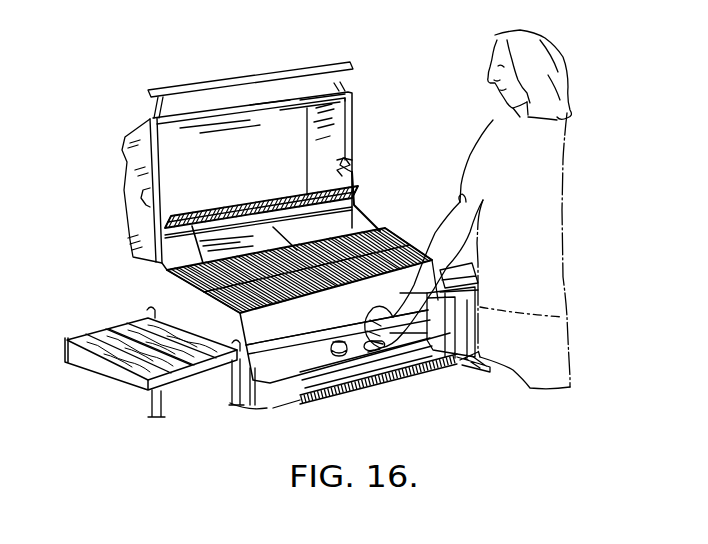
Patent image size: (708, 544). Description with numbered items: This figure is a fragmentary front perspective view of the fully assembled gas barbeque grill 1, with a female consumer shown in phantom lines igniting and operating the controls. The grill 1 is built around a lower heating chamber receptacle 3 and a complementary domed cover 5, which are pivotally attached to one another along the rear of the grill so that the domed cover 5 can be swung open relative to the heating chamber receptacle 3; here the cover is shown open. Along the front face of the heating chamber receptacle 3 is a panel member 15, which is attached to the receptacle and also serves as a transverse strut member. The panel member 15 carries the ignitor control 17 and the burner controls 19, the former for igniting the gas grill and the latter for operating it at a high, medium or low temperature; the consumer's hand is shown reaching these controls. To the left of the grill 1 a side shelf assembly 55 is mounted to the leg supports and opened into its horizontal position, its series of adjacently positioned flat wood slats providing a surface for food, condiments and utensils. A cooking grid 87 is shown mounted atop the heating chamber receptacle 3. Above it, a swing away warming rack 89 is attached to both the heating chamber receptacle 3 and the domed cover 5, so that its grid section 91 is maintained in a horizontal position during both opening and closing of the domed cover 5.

The gas barbeque grill 1 is at (32, 106).
The heating chamber receptacle 3 is at (197, 316).
The domed cover 5 is at (146, 170).
The panel member 15 is at (315, 360).
The ignitor control 17 is at (415, 353).
The burner controls 19 is at (340, 357).
The side shelf assembly 55 is at (136, 376).
The cooking grid 87 is at (427, 217).
The swing away warming rack 89 is at (374, 203).
The grid section 91 is at (333, 193).